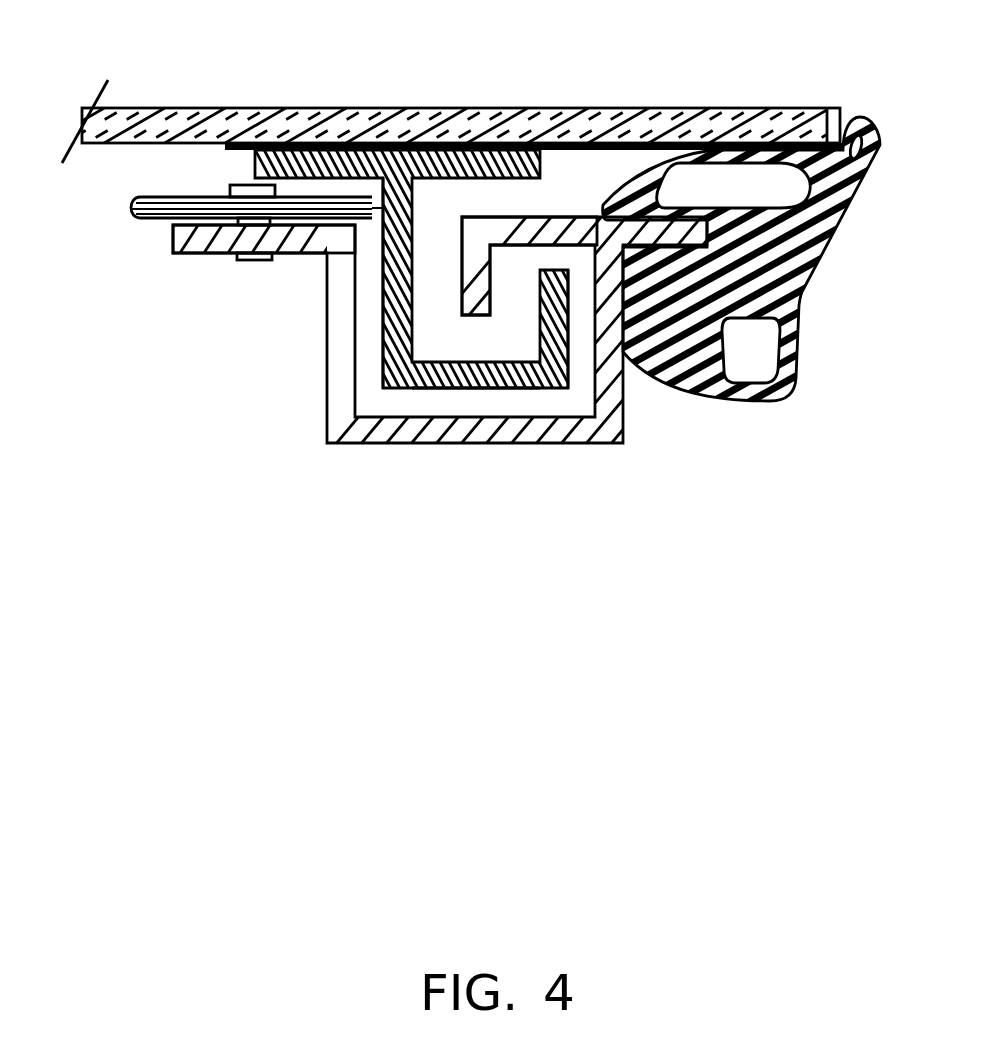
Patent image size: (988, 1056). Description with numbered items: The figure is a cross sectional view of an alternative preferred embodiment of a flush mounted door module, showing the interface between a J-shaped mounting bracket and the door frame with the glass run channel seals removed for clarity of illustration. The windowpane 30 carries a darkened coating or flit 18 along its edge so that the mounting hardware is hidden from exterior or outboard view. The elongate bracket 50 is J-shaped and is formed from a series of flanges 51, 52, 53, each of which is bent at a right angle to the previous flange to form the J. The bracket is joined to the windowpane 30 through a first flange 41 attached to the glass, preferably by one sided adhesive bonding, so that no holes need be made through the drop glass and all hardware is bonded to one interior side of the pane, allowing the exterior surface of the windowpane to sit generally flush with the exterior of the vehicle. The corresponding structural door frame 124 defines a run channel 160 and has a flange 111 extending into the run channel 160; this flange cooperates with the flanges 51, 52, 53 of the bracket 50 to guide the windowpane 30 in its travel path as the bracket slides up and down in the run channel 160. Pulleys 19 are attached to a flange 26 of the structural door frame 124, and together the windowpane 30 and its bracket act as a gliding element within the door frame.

The flit 18 is at (827, 143).
The pulleys 19 is at (135, 198).
The flange 26 is at (195, 250).
The windowpane 30 is at (157, 112).
The first flange 41 is at (470, 180).
The elongate bracket 50 is at (388, 150).
The flange 51 is at (405, 388).
The flange 52 is at (493, 388).
The flange 53 is at (570, 390).
The flange 111 is at (497, 274).
The structural door frame 124 is at (328, 395).
The run channel 160 is at (360, 327).